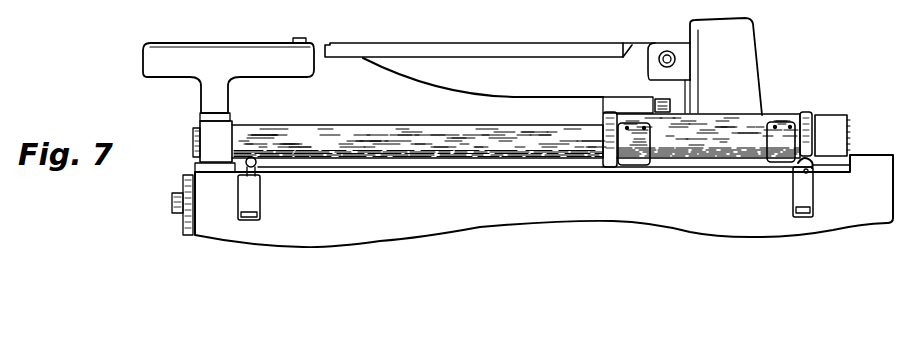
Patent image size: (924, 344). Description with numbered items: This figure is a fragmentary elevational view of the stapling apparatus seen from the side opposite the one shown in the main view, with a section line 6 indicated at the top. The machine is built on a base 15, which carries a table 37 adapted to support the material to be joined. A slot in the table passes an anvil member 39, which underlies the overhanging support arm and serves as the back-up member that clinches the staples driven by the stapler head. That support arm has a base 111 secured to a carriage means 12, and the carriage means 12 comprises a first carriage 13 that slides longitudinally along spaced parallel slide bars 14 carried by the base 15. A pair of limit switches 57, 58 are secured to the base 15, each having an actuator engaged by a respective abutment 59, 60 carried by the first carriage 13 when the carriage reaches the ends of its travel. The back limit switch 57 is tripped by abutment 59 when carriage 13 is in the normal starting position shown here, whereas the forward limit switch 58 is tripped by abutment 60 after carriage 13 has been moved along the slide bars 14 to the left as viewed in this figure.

The section line 6 is at (165, 7).
The carriage means 12 is at (772, 112).
The first carriage 13 is at (787, 117).
The slide bars 14 is at (327, 143).
The base 15 is at (484, 229).
The table 37 is at (142, 60).
The anvil member 39 is at (438, 48).
The back limit switch 57 is at (808, 192).
The forward limit switch 58 is at (247, 200).
The abutment 59 is at (785, 150).
The abutment 60 is at (637, 150).
The base of the support arm 111 is at (760, 62).